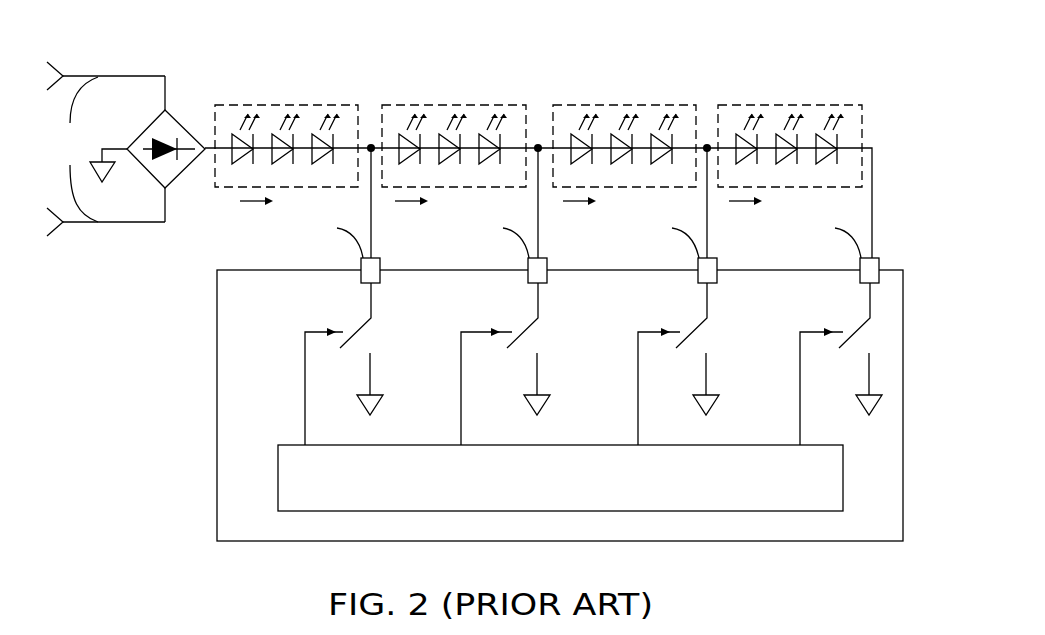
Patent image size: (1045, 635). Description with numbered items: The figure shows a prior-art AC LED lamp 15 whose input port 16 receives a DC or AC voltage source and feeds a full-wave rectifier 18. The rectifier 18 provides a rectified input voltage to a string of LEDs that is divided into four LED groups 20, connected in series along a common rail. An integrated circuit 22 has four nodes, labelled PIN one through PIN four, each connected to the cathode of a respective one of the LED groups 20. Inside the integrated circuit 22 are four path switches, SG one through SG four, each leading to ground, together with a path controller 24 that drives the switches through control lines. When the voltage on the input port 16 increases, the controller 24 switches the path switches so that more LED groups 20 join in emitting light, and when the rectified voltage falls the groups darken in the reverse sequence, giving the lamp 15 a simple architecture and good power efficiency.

The AC LED lamp 15 is at (723, 68).
The input port 16 is at (106, 149).
The full-wave rectifier 18 is at (177, 118).
The LED groups 20 is at (290, 105).
The integrated circuit 22 is at (258, 302).
The path controller 24 is at (468, 489).